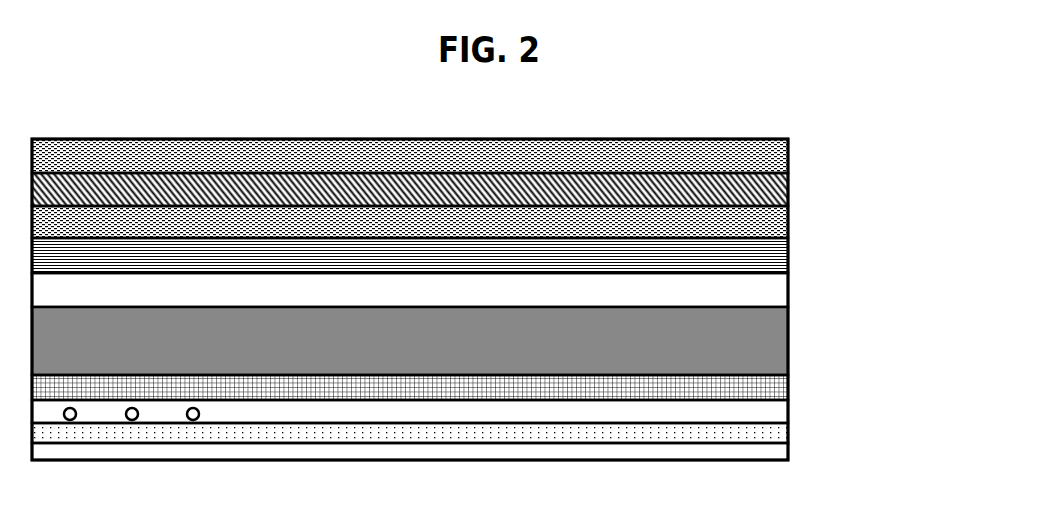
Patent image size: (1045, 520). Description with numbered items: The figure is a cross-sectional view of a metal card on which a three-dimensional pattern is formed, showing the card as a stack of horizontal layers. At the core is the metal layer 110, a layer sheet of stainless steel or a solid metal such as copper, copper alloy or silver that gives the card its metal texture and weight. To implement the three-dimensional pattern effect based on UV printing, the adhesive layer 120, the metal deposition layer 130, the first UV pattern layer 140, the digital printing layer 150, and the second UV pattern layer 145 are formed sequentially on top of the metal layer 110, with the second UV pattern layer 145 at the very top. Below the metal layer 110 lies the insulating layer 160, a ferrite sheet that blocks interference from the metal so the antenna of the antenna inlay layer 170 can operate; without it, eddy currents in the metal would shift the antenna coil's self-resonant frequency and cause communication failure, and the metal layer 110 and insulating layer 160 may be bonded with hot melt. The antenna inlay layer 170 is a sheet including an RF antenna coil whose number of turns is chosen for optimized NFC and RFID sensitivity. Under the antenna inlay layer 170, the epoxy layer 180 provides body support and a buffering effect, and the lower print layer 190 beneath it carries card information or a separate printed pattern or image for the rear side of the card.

The second UV pattern layer 145 is at (788, 157).
The digital printing layer 150 is at (788, 191).
The first UV pattern layer 140 is at (788, 228).
The metal deposition layer 130 is at (788, 257).
The adhesive layer 120 is at (788, 292).
The metal layer 110 is at (788, 345).
The insulating layer 160 is at (788, 389).
The antenna inlay layer 170 is at (788, 417).
The epoxy layer 180 is at (788, 437).
The lower print layer 190 is at (788, 451).